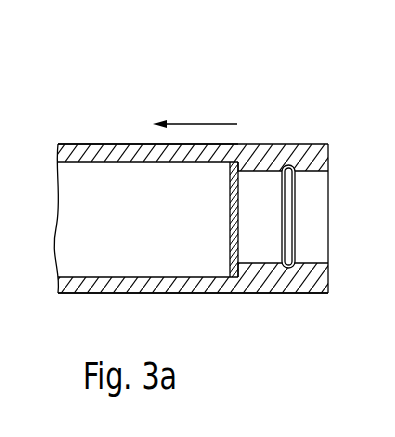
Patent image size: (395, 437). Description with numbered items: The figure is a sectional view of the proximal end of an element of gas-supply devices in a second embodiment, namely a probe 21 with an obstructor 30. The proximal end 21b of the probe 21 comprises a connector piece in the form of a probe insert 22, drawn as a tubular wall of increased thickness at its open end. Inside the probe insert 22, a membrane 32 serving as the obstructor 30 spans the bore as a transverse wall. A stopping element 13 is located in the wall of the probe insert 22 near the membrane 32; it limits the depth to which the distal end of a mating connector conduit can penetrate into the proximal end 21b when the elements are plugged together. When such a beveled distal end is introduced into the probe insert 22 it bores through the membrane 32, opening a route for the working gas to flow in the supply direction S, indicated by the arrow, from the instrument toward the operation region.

The probe 21 is at (60, 299).
The proximal end 21b is at (115, 143).
The probe insert 22 is at (261, 96).
The membrane 32 is at (229, 239).
The stopping element 13 is at (288, 272).
The obstructor 30 is at (226, 285).
The supply direction S is at (195, 111).